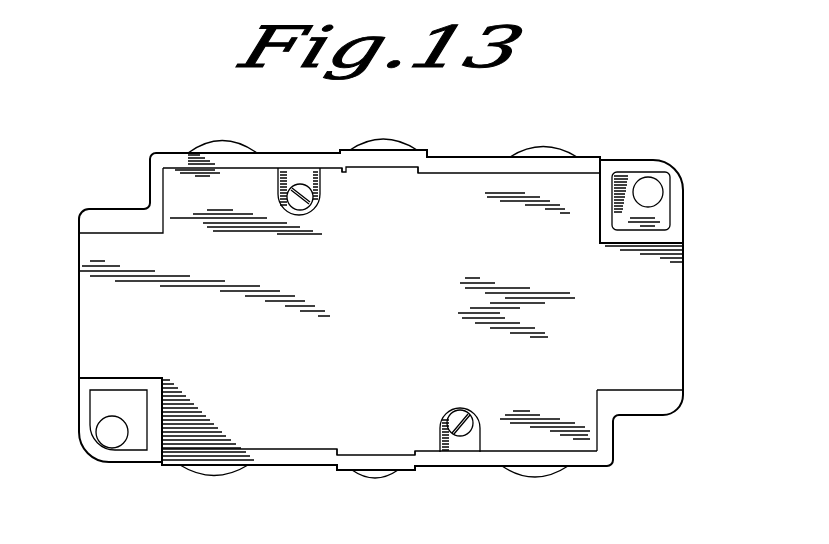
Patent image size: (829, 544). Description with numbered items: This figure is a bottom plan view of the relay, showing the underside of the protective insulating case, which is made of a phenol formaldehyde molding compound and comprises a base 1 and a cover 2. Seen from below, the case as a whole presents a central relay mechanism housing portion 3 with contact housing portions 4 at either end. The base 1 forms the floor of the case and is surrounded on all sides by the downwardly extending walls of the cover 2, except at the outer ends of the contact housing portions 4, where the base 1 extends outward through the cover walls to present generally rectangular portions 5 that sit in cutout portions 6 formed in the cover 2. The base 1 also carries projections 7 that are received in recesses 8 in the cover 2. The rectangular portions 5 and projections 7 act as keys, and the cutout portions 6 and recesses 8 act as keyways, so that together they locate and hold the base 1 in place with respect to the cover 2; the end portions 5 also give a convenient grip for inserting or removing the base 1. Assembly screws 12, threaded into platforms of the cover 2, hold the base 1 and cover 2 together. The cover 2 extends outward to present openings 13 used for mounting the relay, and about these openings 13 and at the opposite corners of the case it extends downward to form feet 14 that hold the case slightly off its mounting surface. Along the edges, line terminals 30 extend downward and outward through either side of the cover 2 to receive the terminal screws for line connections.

The base 1 is at (477, 178).
The cover 2 is at (437, 158).
The central relay mechanism housing portion 3 is at (378, 200).
The contact housing portions 4 is at (87, 316).
The rectangular portions 5 is at (79, 354).
The cutout portions 6 is at (80, 374).
The projections 7 is at (360, 170).
The recesses 8 is at (349, 168).
The assembly screws 12 is at (312, 203).
The openings 13 is at (665, 182).
The feet 14 is at (158, 153).
The line terminals 30 is at (226, 142).